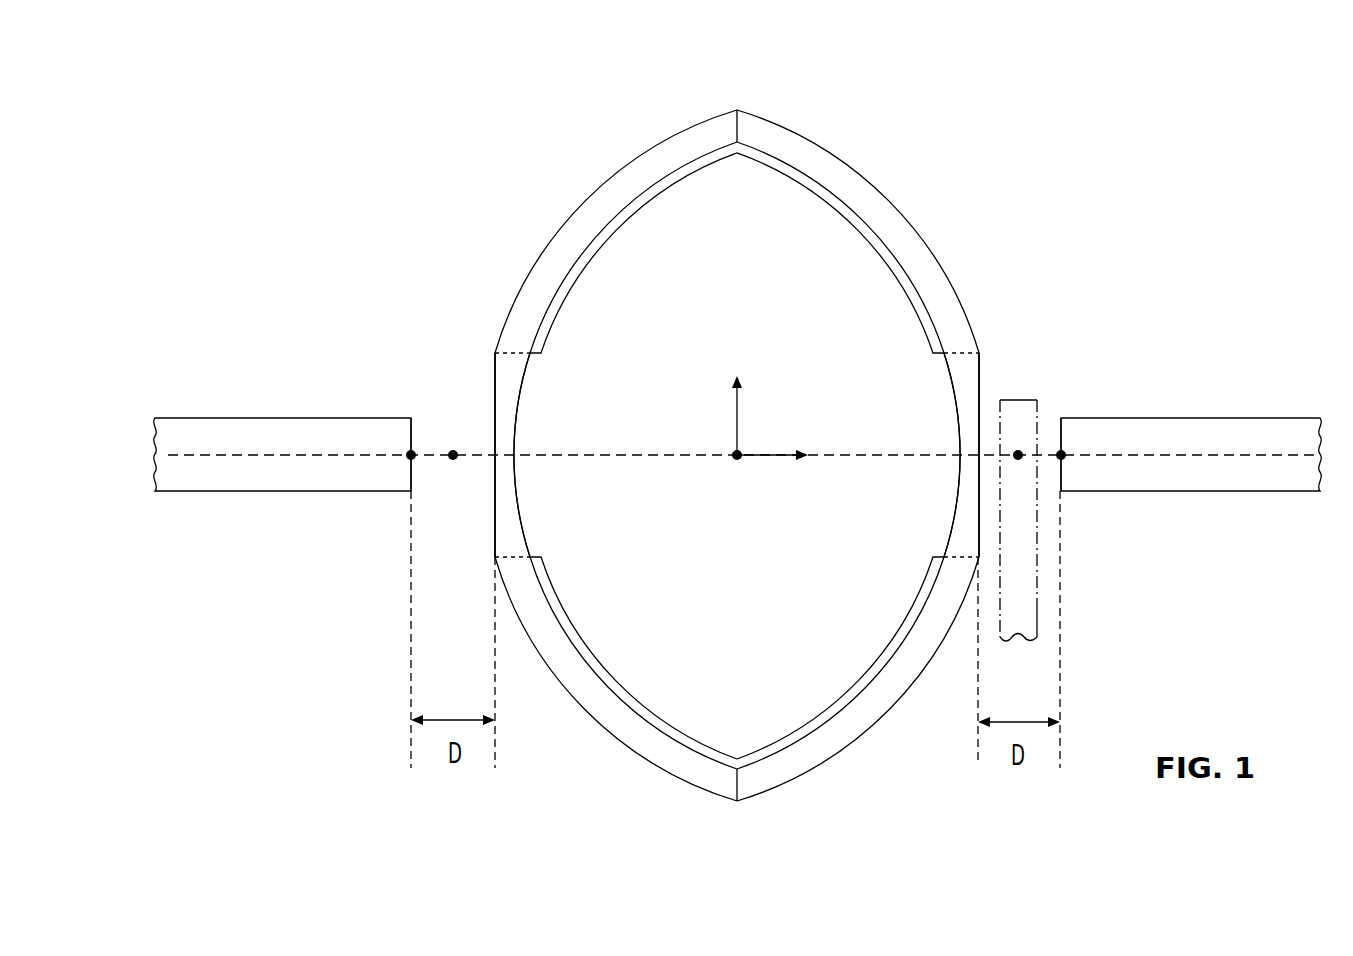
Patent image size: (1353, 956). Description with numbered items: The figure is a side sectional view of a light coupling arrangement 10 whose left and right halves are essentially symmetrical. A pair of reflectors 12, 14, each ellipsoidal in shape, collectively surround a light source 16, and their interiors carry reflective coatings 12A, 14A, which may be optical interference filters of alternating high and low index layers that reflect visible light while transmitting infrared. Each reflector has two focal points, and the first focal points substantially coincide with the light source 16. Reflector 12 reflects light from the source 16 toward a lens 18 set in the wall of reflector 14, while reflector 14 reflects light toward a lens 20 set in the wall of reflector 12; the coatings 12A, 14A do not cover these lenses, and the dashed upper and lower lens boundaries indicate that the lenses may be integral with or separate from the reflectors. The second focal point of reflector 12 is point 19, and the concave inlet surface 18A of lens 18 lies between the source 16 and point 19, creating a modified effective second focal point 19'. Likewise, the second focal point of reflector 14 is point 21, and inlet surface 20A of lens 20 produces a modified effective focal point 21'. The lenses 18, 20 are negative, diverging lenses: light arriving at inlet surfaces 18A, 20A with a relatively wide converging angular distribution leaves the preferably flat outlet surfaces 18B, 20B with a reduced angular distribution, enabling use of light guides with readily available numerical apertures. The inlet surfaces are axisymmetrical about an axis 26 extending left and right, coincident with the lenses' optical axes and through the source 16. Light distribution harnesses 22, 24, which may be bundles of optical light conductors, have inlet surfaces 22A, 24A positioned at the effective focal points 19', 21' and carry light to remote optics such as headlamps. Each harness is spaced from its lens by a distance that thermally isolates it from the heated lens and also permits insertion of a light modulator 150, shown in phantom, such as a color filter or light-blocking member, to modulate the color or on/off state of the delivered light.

The light coupling arrangement 10 is at (442, 143).
The reflector 12 is at (592, 195).
The reflector 14 is at (847, 158).
The reflective coating 12A is at (665, 190).
The reflective coating 14A is at (813, 193).
The light source 16 is at (737, 462).
The lens 18 is at (982, 395).
The inlet surface 18A is at (960, 438).
The outlet surface 18B is at (979, 507).
The second focal point 19 is at (1040, 391).
The modified, effective second focal point 19' is at (1089, 391).
The lens 20 is at (495, 400).
The inlet surface 20A is at (518, 522).
The outlet surface 20B is at (495, 492).
The second focal point 21 is at (436, 391).
The modified, effective second focal point 21' is at (389, 391).
The light distribution harness 22 is at (1276, 425).
The inlet surface 22A is at (1062, 471).
The light distribution harness 24 is at (204, 425).
The inlet surface 24A is at (411, 471).
The axis 26 is at (660, 455).
The light modulator 150 is at (1037, 605).